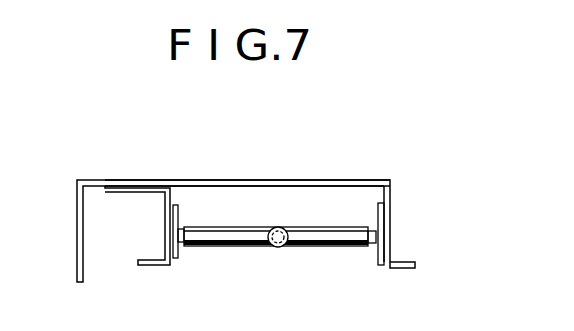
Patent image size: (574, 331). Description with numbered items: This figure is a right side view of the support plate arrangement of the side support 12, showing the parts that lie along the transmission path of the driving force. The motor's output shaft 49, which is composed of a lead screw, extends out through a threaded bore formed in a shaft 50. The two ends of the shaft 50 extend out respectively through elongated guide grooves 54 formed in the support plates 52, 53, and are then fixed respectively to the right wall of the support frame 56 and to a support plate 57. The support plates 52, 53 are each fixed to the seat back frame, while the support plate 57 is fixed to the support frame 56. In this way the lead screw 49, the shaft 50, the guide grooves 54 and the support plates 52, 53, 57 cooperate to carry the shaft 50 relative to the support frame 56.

The side support 12 is at (392, 146).
The output shaft 49 is at (280, 227).
The shaft 50 is at (333, 228).
The support plate 52 is at (378, 213).
The support plate 53 is at (178, 213).
The elongated guide groove 54 is at (178, 238).
The support frame 56 is at (228, 180).
The support plate 57 is at (170, 214).